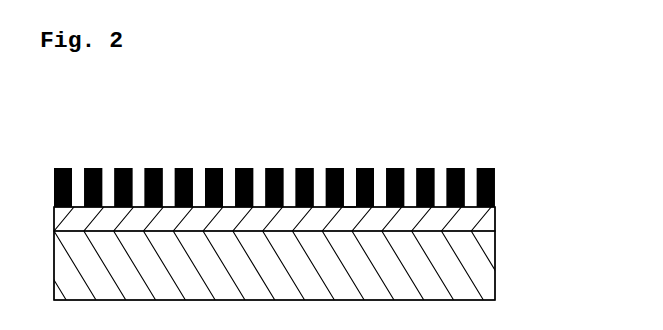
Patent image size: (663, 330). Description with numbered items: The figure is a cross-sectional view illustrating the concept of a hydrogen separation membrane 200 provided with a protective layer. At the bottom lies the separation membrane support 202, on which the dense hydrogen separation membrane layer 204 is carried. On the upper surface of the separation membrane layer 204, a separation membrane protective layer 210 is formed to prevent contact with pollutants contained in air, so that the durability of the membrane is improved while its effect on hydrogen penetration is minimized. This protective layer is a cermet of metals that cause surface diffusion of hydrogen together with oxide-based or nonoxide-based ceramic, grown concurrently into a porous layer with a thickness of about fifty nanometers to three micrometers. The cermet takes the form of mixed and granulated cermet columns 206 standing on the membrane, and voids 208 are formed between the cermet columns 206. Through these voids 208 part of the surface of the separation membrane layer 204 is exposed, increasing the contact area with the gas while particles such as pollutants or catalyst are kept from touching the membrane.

The hydrogen separation membrane 200 is at (298, 90).
The separation membrane support 202 is at (496, 265).
The separation membrane layer 204 is at (496, 210).
The cermet column 206 is at (421, 168).
The void 208 is at (348, 170).
The separation membrane protective layer 210 is at (504, 178).